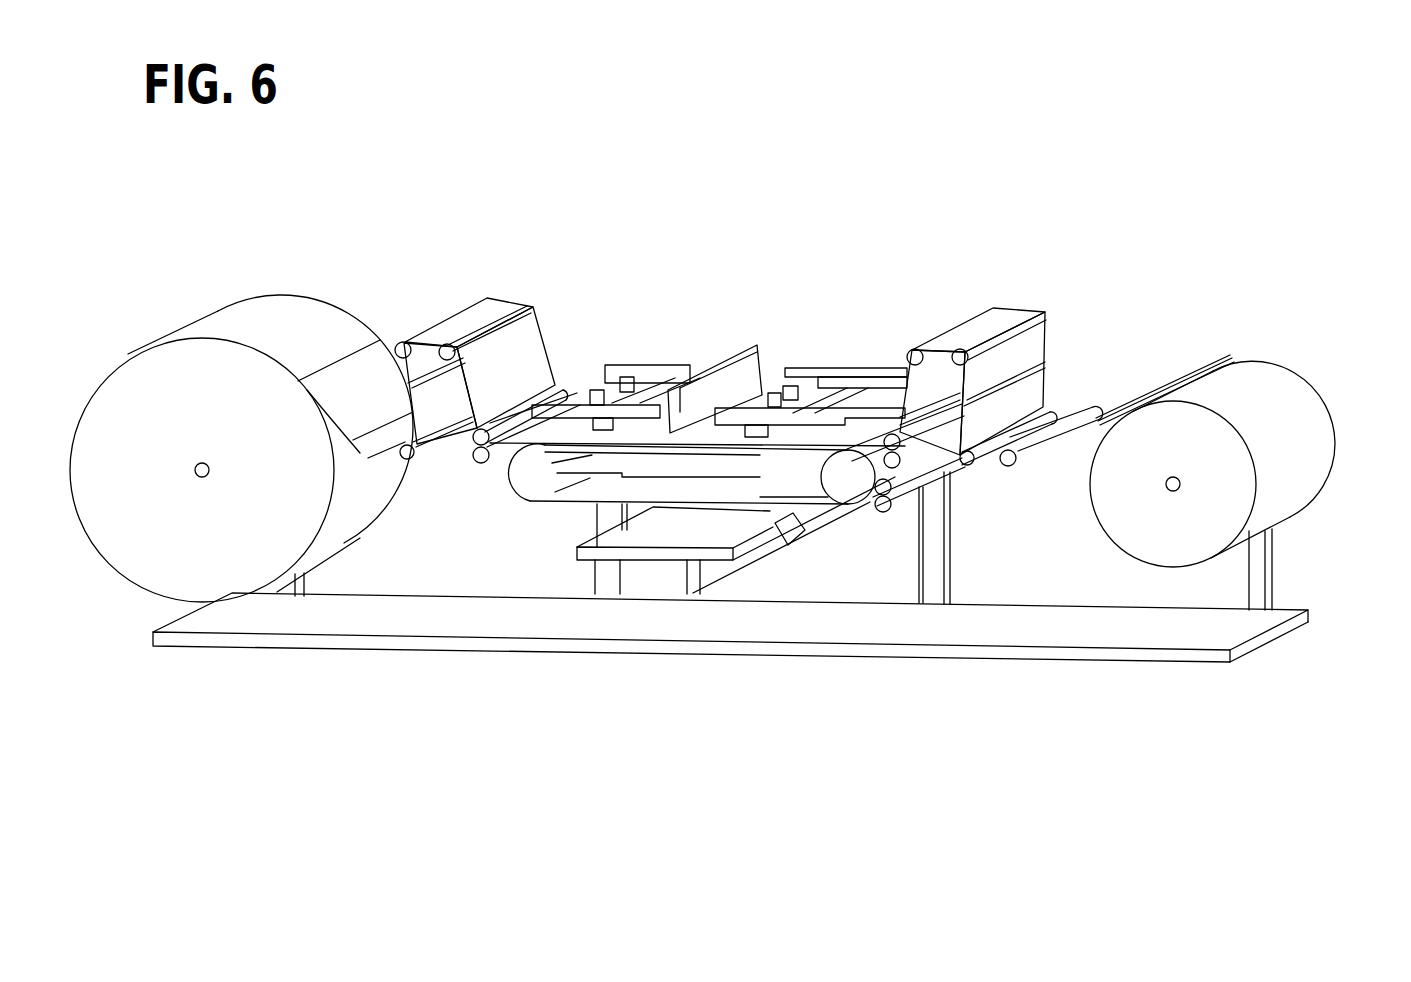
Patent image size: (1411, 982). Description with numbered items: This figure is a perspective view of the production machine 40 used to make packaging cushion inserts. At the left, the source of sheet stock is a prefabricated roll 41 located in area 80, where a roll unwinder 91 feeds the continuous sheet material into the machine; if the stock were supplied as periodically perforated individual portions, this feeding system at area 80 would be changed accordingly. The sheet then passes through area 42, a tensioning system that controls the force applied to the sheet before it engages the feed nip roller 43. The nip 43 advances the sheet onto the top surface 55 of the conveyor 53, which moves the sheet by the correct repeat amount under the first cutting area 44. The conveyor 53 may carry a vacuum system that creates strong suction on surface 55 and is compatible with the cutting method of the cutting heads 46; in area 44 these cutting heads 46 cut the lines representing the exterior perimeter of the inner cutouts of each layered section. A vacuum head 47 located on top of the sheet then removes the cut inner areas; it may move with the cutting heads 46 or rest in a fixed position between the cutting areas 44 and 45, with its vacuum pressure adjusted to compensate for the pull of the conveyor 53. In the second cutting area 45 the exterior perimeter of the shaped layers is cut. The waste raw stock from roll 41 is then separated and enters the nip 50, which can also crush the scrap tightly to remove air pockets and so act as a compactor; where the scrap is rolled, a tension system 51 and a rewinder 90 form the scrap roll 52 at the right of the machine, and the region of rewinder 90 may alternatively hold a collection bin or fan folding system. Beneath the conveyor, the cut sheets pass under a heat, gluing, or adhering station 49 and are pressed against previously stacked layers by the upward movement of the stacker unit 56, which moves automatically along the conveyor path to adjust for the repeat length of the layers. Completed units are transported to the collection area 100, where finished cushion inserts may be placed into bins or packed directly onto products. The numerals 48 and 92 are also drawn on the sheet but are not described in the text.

The machine 40 is at (1042, 137).
The roll 41 is at (235, 416).
The tensioning system 42 is at (507, 284).
The feed nip roller 43 is at (463, 451).
The cutting area number 1 44 is at (654, 349).
The second cutting area 45 is at (836, 356).
The cutting heads 46 is at (590, 387).
The vacuum head 47 is at (741, 340).
The processing station 48 is at (803, 211).
The heat, gluing, or adhering station 49 is at (816, 538).
The nip 50 is at (920, 455).
The tension system 51 is at (1002, 456).
The roll 52 is at (1236, 444).
The conveyor 53 is at (543, 489).
The top surface 55 is at (541, 453).
The stacker unit 56 is at (630, 566).
The area 80 is at (320, 292).
The rewinder 90 is at (1185, 487).
The roll unwinder 91 is at (200, 478).
The take-up web 92 is at (1297, 339).
The collection area 100 is at (679, 617).